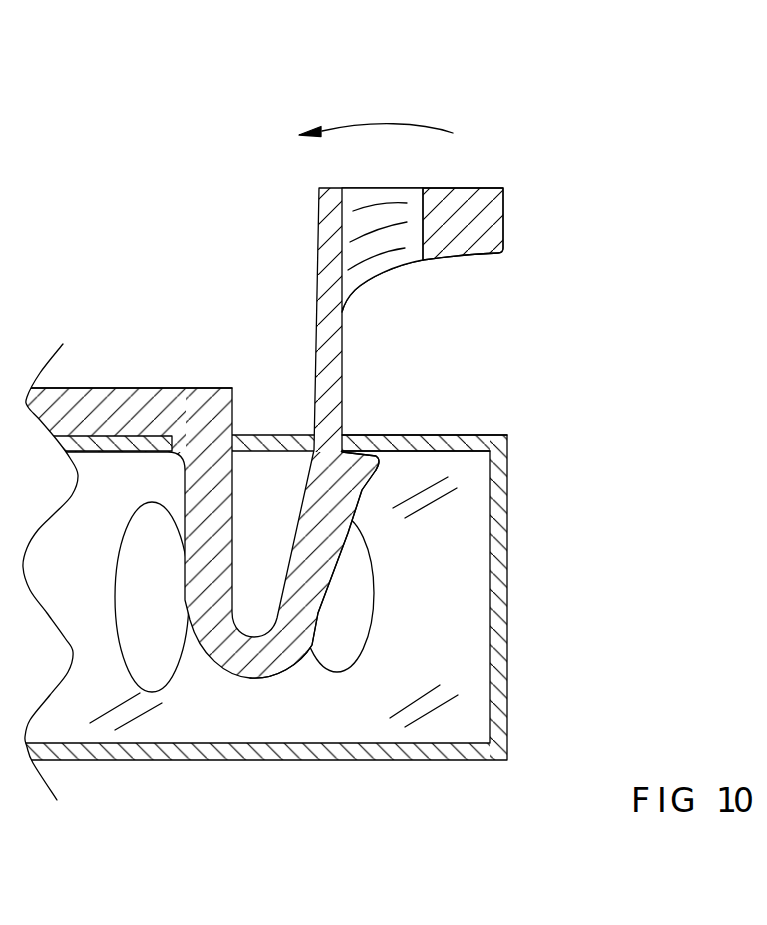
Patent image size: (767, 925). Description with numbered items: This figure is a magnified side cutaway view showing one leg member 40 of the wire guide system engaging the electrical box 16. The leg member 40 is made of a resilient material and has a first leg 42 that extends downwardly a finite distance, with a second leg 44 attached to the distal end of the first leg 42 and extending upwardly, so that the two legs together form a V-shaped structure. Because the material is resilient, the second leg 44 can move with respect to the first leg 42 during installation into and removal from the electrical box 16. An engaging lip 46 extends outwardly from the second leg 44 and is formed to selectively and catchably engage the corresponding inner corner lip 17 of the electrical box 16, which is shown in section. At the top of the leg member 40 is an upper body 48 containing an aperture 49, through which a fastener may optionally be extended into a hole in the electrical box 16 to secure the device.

The electrical box 16 is at (507, 537).
The inner corner lip 17 is at (410, 443).
The leg member 40 is at (369, 440).
The first leg 42 is at (213, 573).
The second leg 44 is at (323, 563).
The engaging lip 46 is at (378, 457).
The upper body 48 is at (483, 233).
The aperture 49 is at (367, 245).